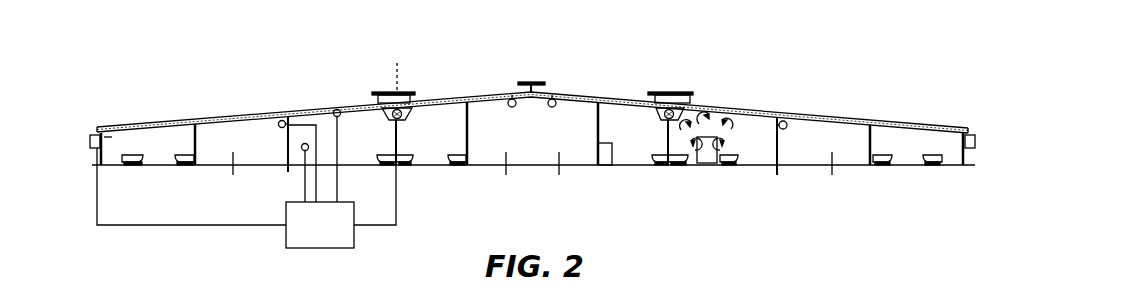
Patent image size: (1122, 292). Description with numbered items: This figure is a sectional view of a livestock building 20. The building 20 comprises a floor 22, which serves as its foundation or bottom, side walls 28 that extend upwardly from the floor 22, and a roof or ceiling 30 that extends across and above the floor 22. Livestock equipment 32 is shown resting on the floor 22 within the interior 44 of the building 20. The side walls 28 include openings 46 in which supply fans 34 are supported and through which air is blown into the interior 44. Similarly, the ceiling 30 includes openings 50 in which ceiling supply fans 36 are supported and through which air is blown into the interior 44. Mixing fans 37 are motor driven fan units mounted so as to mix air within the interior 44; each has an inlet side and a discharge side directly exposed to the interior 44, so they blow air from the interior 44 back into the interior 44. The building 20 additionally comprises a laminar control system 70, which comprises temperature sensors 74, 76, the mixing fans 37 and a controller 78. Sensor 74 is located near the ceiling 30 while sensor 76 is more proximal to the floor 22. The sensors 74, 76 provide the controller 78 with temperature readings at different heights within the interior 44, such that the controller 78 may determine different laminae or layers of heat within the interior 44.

The livestock building 20 is at (527, 143).
The floor 22 is at (547, 167).
The side walls 28 is at (97, 130).
The roof or ceiling 30 is at (738, 104).
The livestock equipment 32 is at (609, 164).
The supply fans 34 is at (90, 143).
The ceiling supply fans 36 is at (405, 116).
The mixing fans 37 is at (281, 120).
The interior 44 is at (886, 137).
The openings 46 is at (106, 139).
The openings 50 is at (693, 96).
The laminar control system 70 is at (269, 165).
The temperature sensor 74 is at (337, 110).
The temperature sensor 76 is at (301, 147).
The controller 78 is at (325, 249).